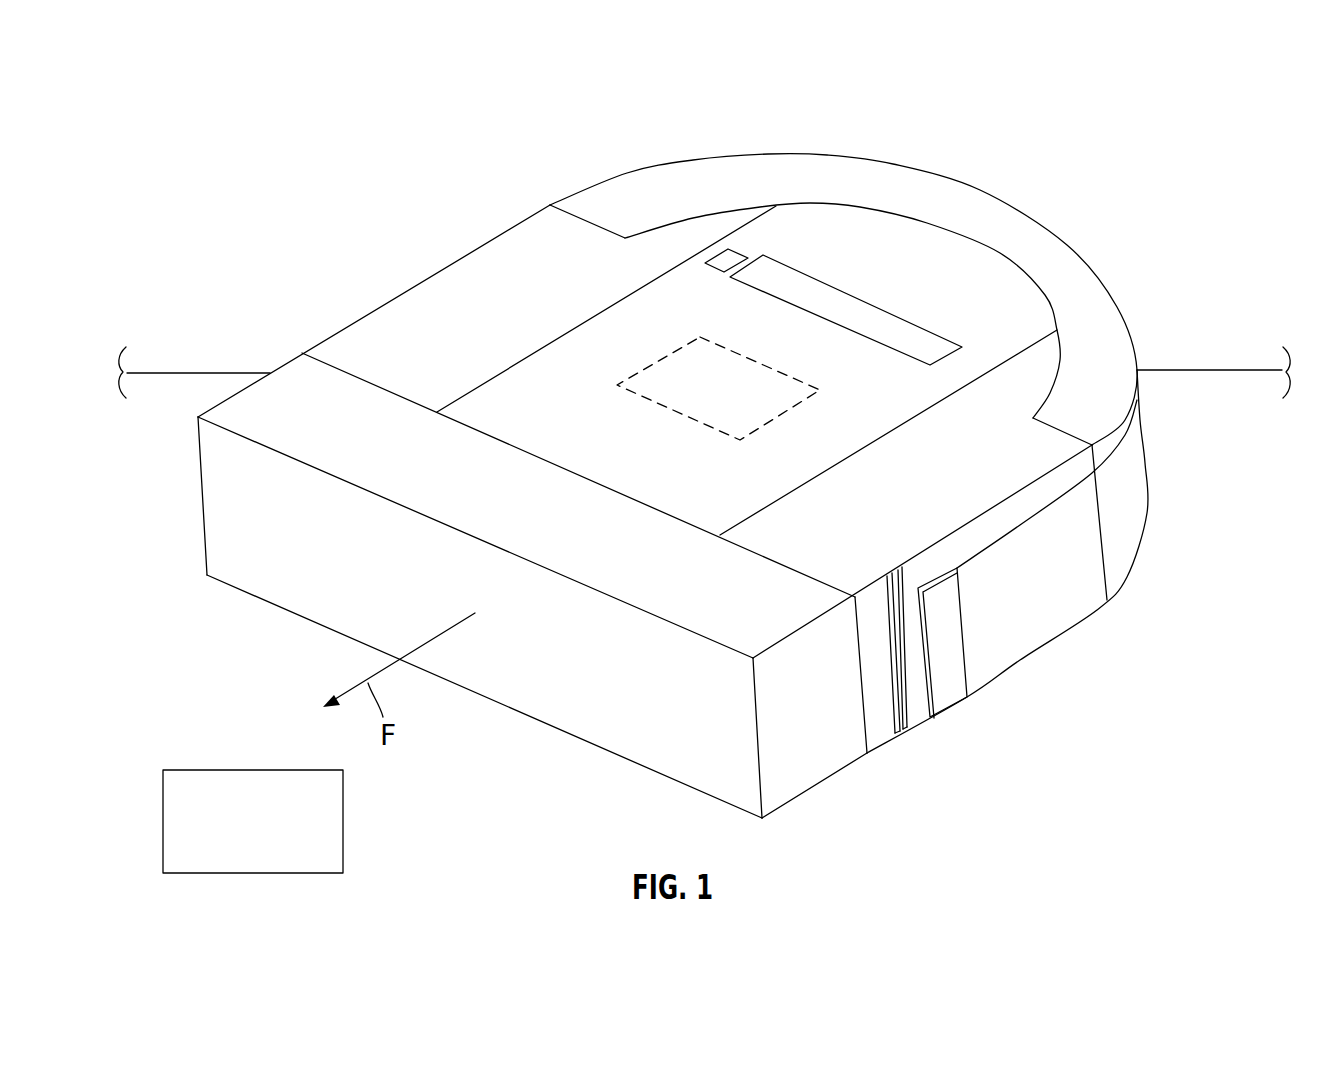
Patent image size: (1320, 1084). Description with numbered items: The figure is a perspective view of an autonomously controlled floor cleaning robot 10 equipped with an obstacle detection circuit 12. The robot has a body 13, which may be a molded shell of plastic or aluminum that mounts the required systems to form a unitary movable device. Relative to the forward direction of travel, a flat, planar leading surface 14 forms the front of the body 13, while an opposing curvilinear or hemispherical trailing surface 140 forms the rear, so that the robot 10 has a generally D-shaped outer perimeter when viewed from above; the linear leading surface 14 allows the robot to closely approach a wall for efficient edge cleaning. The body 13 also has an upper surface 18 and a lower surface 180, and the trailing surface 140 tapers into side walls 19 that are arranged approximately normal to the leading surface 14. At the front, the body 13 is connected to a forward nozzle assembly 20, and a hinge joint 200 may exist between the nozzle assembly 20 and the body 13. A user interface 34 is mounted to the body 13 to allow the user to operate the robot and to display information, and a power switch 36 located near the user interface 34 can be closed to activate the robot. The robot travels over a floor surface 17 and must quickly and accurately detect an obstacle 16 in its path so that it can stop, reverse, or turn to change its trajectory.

The floor cleaning robot 10 is at (1161, 167).
The obstacle detection circuit 12 is at (730, 401).
The body 13 is at (556, 169).
The leading surface 14 is at (275, 585).
The obstacle 16 is at (269, 856).
The floor surface 17 is at (170, 366).
The upper surface 18 is at (998, 305).
The side walls 19 is at (493, 233).
The nozzle assembly 20 is at (182, 460).
The user interface 34 is at (858, 295).
The power switch 36 is at (738, 248).
The trailing surface 140 is at (1002, 195).
The lower surface 180 is at (614, 773).
The hinge joint 200 is at (861, 776).